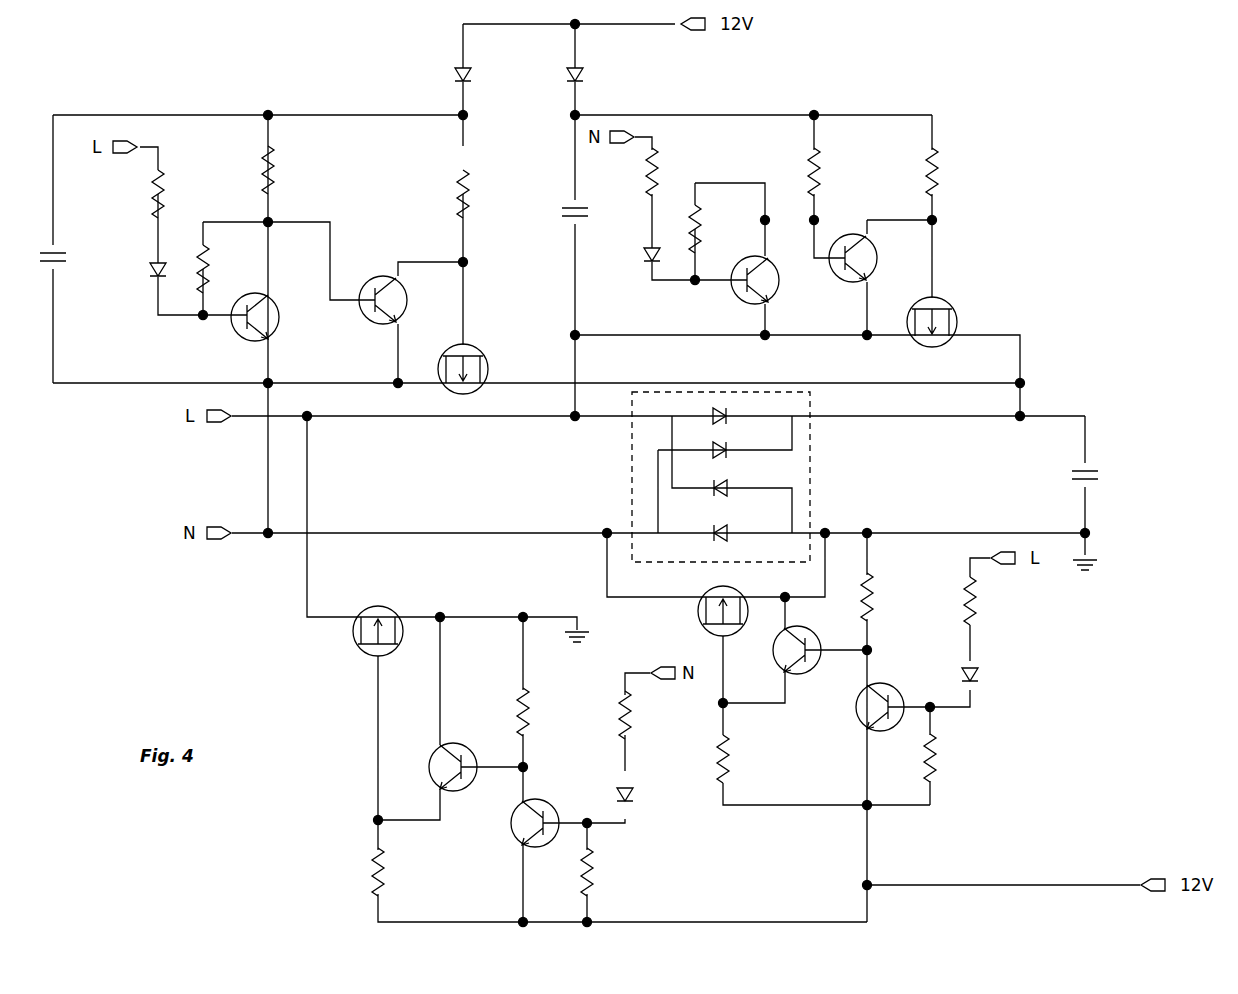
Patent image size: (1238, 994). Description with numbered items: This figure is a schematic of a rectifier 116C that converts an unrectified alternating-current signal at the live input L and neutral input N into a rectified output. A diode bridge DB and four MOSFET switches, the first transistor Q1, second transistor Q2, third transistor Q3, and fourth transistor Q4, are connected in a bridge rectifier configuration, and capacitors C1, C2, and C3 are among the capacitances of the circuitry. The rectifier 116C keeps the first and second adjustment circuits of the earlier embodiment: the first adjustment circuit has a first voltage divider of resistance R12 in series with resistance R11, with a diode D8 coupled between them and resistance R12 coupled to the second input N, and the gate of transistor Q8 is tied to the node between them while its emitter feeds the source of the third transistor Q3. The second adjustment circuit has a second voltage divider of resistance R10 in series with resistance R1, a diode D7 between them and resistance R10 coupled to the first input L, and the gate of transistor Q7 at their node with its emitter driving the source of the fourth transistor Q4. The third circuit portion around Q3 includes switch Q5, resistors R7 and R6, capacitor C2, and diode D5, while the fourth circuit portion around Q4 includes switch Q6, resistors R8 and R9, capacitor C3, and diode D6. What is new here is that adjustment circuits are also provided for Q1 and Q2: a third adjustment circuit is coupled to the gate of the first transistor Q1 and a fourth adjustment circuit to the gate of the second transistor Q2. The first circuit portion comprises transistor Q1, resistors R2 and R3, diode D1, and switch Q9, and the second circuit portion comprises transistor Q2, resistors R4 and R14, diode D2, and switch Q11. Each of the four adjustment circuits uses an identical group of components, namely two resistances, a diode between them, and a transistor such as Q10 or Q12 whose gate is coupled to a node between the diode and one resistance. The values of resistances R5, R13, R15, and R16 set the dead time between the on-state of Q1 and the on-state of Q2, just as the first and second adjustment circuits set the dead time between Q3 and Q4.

The rectifier 116C is at (998, 112).
The resistance R1 is at (217, 269).
The resistor R2 is at (707, 759).
The resistor R3 is at (851, 597).
The resistor R4 is at (360, 872).
The resistance R5 is at (913, 758).
The resistor R6 is at (948, 172).
The resistor R7 is at (830, 172).
The resistor R8 is at (480, 194).
The resistor R9 is at (284, 170).
The resistance R10 is at (179, 194).
The resistance R11 is at (717, 229).
The resistance R12 is at (673, 172).
The resistance R13 is at (949, 601).
The resistor R14 is at (502, 712).
The resistance R15 is at (566, 872).
The resistance R16 is at (605, 715).
The diode D1 is at (951, 670).
The diode D2 is at (608, 793).
The diode D5 is at (595, 75).
The diode D6 is at (444, 75).
The diode D7 is at (173, 269).
The diode D8 is at (633, 254).
The capacitor C1 is at (1099, 465).
The capacitor C2 is at (585, 197).
The capacitor C3 is at (69, 257).
The first transistor Q1 is at (723, 600).
The second transistor Q2 is at (378, 618).
The third transistor Q3 is at (944, 313).
The fourth transistor Q4 is at (471, 357).
The switch Q5 is at (868, 258).
The switch Q6 is at (399, 300).
The transistor Q7 is at (271, 317).
The transistor Q8 is at (770, 280).
The switch Q9 is at (781, 650).
The transistor Q10 is at (858, 707).
The switch Q11 is at (432, 767).
The transistor Q12 is at (514, 823).
The diode bridge DB is at (779, 474).